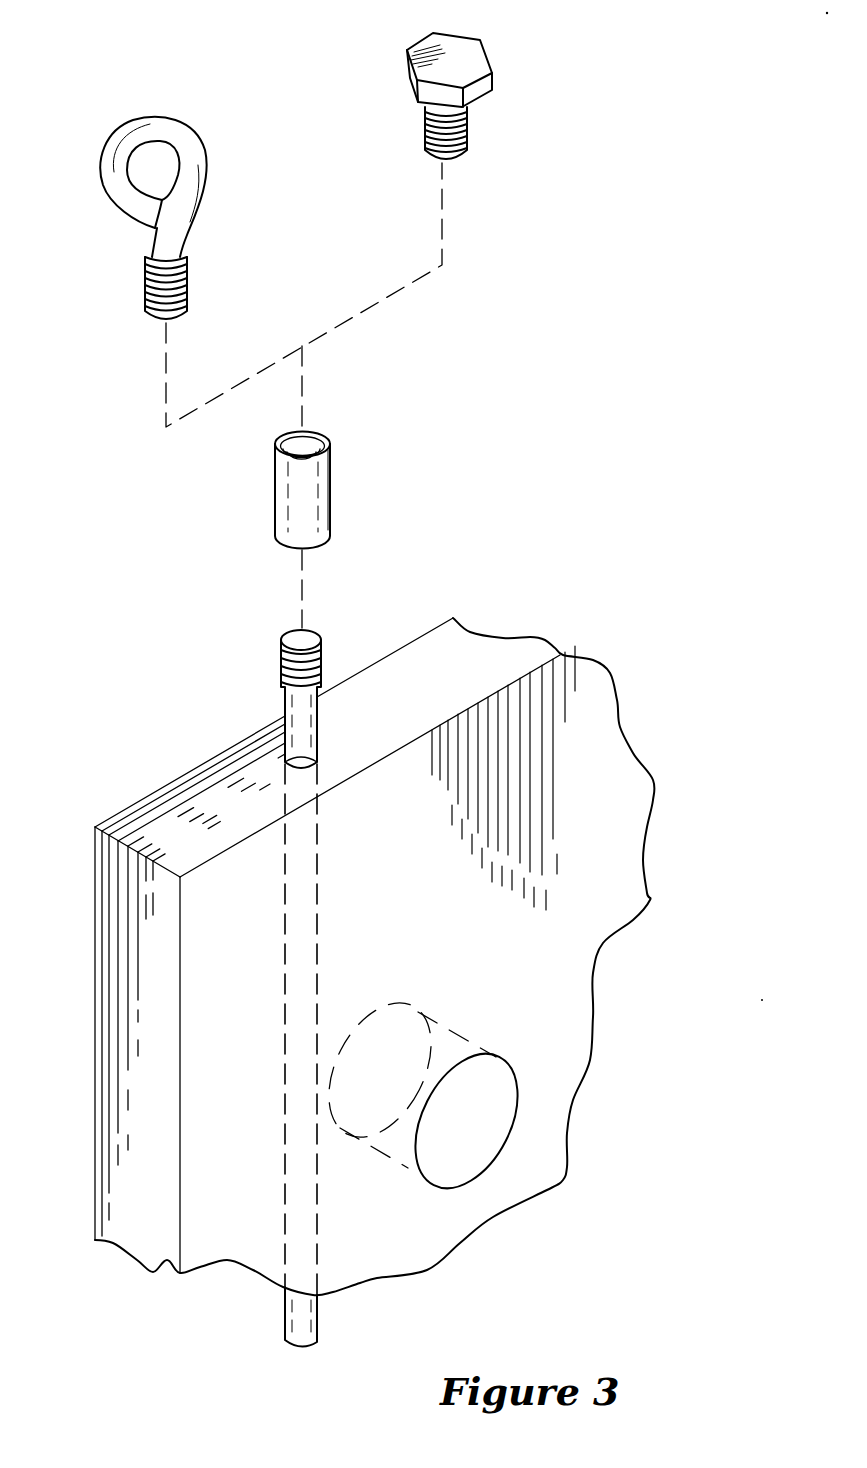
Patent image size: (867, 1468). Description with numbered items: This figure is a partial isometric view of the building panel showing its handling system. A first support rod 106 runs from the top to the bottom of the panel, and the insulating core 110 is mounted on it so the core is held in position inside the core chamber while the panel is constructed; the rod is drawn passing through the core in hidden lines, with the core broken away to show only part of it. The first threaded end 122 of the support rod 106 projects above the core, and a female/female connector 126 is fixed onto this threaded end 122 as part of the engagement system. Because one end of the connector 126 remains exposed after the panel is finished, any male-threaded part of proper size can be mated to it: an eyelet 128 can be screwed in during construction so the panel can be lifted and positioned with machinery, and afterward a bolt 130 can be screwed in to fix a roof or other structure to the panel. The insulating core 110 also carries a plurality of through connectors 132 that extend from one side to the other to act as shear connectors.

The first support rod 106 is at (285, 1316).
The insulating core 110 is at (563, 655).
The first threaded end 122 is at (319, 639).
The female/female connector 126 is at (330, 468).
The eyelet 128 is at (178, 137).
The bolt 130 is at (490, 82).
The through connector 132 is at (493, 1057).